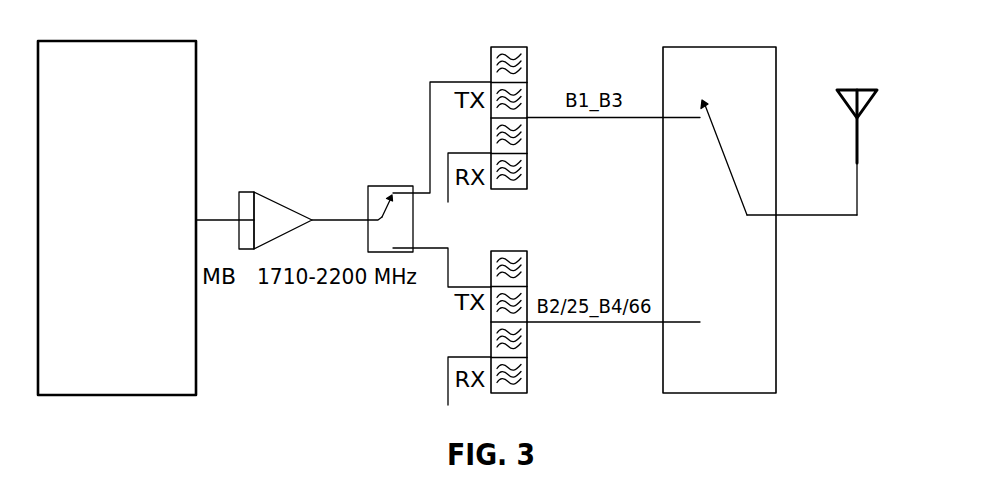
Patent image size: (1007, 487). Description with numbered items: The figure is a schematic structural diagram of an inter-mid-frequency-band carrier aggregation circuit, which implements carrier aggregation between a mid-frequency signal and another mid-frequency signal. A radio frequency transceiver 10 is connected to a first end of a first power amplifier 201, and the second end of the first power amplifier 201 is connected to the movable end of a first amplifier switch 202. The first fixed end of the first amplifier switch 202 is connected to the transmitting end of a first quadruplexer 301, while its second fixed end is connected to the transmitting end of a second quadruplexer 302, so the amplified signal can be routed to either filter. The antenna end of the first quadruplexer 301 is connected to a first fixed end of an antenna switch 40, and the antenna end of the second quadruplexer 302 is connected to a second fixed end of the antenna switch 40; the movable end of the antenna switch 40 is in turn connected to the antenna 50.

The radio frequency transceiver 10 is at (198, 63).
The first power amplifier 201 is at (239, 192).
The first amplifier switch 202 is at (382, 186).
The first quadruplexer 301 is at (527, 58).
The second quadruplexer 302 is at (527, 262).
The antenna switch 40 is at (753, 47).
The antenna 50 is at (857, 90).